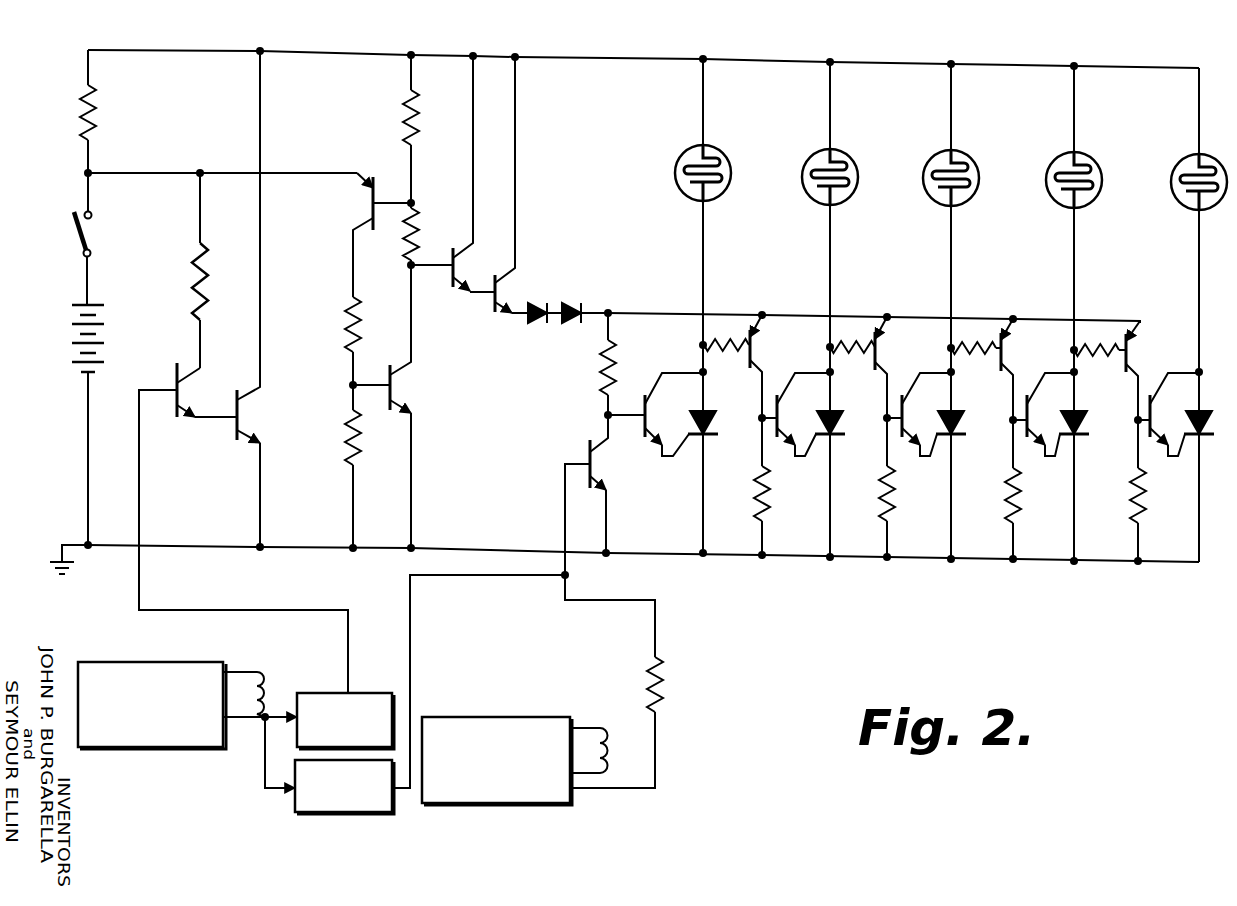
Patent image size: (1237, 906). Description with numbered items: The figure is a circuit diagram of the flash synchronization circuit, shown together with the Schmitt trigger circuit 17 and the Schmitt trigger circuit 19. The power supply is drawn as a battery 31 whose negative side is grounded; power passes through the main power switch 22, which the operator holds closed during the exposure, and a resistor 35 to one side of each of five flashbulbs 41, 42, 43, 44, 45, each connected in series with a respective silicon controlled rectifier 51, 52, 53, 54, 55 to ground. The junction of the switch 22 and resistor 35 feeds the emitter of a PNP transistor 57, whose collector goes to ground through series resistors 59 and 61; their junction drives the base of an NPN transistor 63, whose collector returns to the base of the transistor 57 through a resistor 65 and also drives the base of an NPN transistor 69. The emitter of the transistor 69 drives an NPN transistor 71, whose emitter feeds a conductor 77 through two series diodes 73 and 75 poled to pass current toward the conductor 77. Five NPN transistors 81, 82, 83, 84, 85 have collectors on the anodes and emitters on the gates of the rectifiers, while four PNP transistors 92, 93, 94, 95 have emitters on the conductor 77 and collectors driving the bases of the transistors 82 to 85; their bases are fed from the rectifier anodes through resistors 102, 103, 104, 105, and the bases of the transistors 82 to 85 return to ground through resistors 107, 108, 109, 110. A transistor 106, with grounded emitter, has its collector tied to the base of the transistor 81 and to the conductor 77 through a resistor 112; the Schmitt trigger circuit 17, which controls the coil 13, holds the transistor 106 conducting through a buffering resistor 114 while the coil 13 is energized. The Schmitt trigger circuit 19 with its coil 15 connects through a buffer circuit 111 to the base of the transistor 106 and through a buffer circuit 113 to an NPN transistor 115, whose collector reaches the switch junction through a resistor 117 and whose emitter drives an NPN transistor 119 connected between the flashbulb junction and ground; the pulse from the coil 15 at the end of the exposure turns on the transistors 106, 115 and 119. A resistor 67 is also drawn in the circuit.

The coil 13 is at (603, 734).
The coil 15 is at (253, 666).
The Schmitt trigger circuit 17 is at (495, 805).
The Schmitt trigger circuit 19 is at (140, 748).
The main power switch 22 is at (78, 235).
The battery 31 is at (86, 304).
The resistor 35 is at (87, 118).
The flashbulb 41 is at (696, 202).
The flashbulb 42 is at (822, 205).
The flashbulb 43 is at (942, 207).
The flashbulb 44 is at (1071, 208).
The flashbulb 45 is at (1194, 212).
The silicon controlled rectifier 51 is at (708, 426).
The silicon controlled rectifier 52 is at (833, 428).
The silicon controlled rectifier 53 is at (956, 430).
The silicon controlled rectifier 54 is at (1078, 431).
The silicon controlled rectifier 55 is at (1198, 441).
The PNP transistor 57 is at (373, 235).
The resistor 59 is at (350, 321).
The resistor 61 is at (350, 432).
The NPN transistor 63 is at (390, 365).
The resistor 65 is at (413, 228).
The resistor 67 is at (409, 122).
The NPN transistor 69 is at (451, 285).
The NPN transistor 71 is at (493, 308).
The diode 73 is at (538, 319).
The diode 75 is at (570, 305).
The conductor 77 is at (662, 312).
The NPN transistor 81 is at (648, 376).
The NPN transistor 82 is at (777, 392).
The NPN transistor 83 is at (902, 394).
The NPN transistor 84 is at (1025, 394).
The NPN transistor 85 is at (1147, 399).
The PNP transistor 92 is at (750, 354).
The PNP transistor 93 is at (870, 360).
The PNP transistor 94 is at (998, 360).
The PNP transistor 95 is at (1120, 362).
The resistor 102 is at (720, 332).
The resistor 103 is at (846, 336).
The resistor 104 is at (970, 337).
The resistor 105 is at (1092, 339).
The transistor 106 is at (589, 441).
The resistor 107 is at (763, 484).
The resistor 108 is at (888, 497).
The resistor 109 is at (1014, 509).
The resistor 110 is at (1137, 489).
The buffer circuit 111 is at (365, 812).
The resistor 112 is at (606, 379).
The buffer circuit 113 is at (367, 690).
The buffering resistor 114 is at (656, 692).
The NPN transistor 115 is at (176, 376).
The resistor 117 is at (199, 292).
The NPN transistor 119 is at (237, 437).